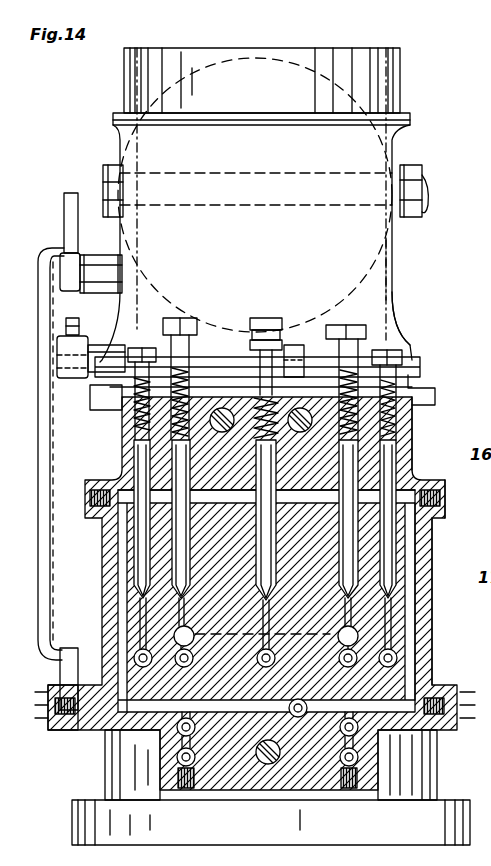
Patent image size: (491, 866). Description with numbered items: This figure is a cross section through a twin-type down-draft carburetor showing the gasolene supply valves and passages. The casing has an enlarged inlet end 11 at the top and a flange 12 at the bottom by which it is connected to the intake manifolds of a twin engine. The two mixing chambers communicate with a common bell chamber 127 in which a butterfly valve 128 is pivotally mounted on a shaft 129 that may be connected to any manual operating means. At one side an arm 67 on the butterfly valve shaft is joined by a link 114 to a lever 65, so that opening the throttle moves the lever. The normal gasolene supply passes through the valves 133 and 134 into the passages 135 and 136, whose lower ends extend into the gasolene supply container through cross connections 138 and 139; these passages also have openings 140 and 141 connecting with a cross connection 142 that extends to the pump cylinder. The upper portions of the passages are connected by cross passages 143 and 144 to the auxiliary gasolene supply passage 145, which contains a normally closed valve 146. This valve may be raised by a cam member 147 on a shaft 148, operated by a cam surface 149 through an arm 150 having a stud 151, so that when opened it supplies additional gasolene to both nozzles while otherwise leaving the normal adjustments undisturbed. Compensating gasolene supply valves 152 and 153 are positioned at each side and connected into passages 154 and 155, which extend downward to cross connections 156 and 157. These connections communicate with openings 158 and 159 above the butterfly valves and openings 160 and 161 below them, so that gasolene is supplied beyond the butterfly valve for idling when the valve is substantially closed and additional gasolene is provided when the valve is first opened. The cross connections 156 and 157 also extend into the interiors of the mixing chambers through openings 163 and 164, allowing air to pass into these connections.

The enlarged inlet end 11 is at (408, 130).
The flange 12 is at (290, 845).
The lever 65 is at (70, 192).
The arm 67 is at (60, 686).
The link 114 is at (44, 246).
The bell chamber 127 is at (397, 280).
The butterfly valve 128 is at (388, 248).
The shaft 129 is at (424, 185).
The gasolene valve 133 is at (200, 318).
The gasolene valve 134 is at (352, 325).
The passage 135 is at (180, 627).
The passage 136 is at (350, 608).
The cross connection 138 is at (140, 650).
The cross connection 139 is at (358, 636).
The opening 140 is at (180, 652).
The opening 141 is at (360, 615).
The cross connection 142 is at (357, 658).
The cross passage 143 is at (245, 470).
The cross passage 144 is at (300, 470).
The auxiliary gasolene supply passage 145 is at (300, 575).
The valve 146 is at (270, 318).
The cam member 147 is at (286, 345).
The shaft 148 is at (100, 372).
The cam surface 149 is at (68, 290).
The arm 150 is at (60, 350).
The stud 151 is at (66, 326).
The compensating gasolene supply valve 152 is at (145, 348).
The compensating gasolene supply valve 153 is at (412, 440).
The passage 154 is at (118, 540).
The passage 155 is at (414, 545).
The cross connection 156 is at (140, 706).
The cross connection 157 is at (405, 685).
The opening 158 is at (176, 730).
The opening 159 is at (358, 727).
The opening 160 is at (176, 757).
The opening 161 is at (358, 757).
The opening 163 is at (246, 780).
The opening 164 is at (298, 718).